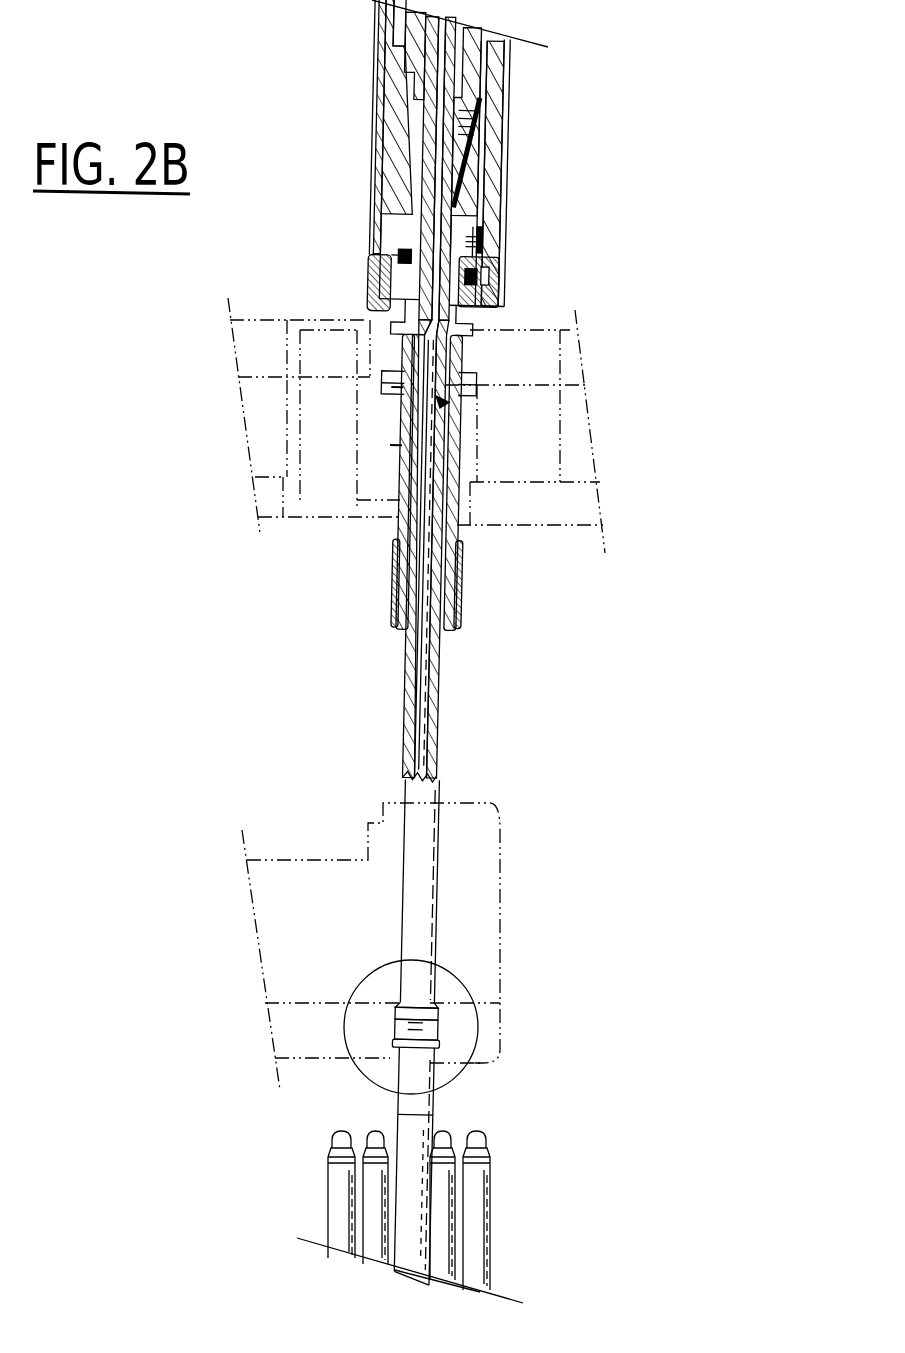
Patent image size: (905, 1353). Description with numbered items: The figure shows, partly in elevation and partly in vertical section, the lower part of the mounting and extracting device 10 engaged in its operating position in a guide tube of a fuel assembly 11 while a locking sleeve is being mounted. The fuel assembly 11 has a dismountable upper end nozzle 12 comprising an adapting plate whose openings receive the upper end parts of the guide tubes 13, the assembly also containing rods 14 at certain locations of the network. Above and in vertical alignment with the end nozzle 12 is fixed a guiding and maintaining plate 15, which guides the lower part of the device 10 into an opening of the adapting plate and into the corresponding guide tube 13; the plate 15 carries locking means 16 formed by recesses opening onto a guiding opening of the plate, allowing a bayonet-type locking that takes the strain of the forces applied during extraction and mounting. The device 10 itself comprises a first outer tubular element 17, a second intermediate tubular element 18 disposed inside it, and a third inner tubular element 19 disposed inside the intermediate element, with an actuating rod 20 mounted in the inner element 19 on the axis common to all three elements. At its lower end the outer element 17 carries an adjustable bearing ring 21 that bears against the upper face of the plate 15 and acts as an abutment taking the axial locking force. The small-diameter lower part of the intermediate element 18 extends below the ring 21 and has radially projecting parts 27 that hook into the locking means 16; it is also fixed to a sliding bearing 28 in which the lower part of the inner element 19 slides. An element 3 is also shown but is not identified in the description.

The coupling joint 3 is at (478, 1032).
The mounting and extracting device 10 is at (441, 644).
The fuel assembly 11 is at (497, 1160).
The dismountable upper end nozzle 12 is at (473, 865).
The guide tubes 13 is at (440, 1205).
The rods 14 is at (472, 1282).
The guiding and maintaining plate 15 is at (565, 425).
The locking means 16 is at (486, 378).
The first outer tubular element 17 is at (506, 86).
The second intermediate tubular element 18 is at (460, 522).
The third inner tubular element 19 is at (436, 682).
The actuating rod 20 is at (437, 612).
The adjustable bearing ring 21 is at (374, 275).
The radially projecting parts 27 is at (404, 388).
The sliding bearing 28 is at (398, 620).